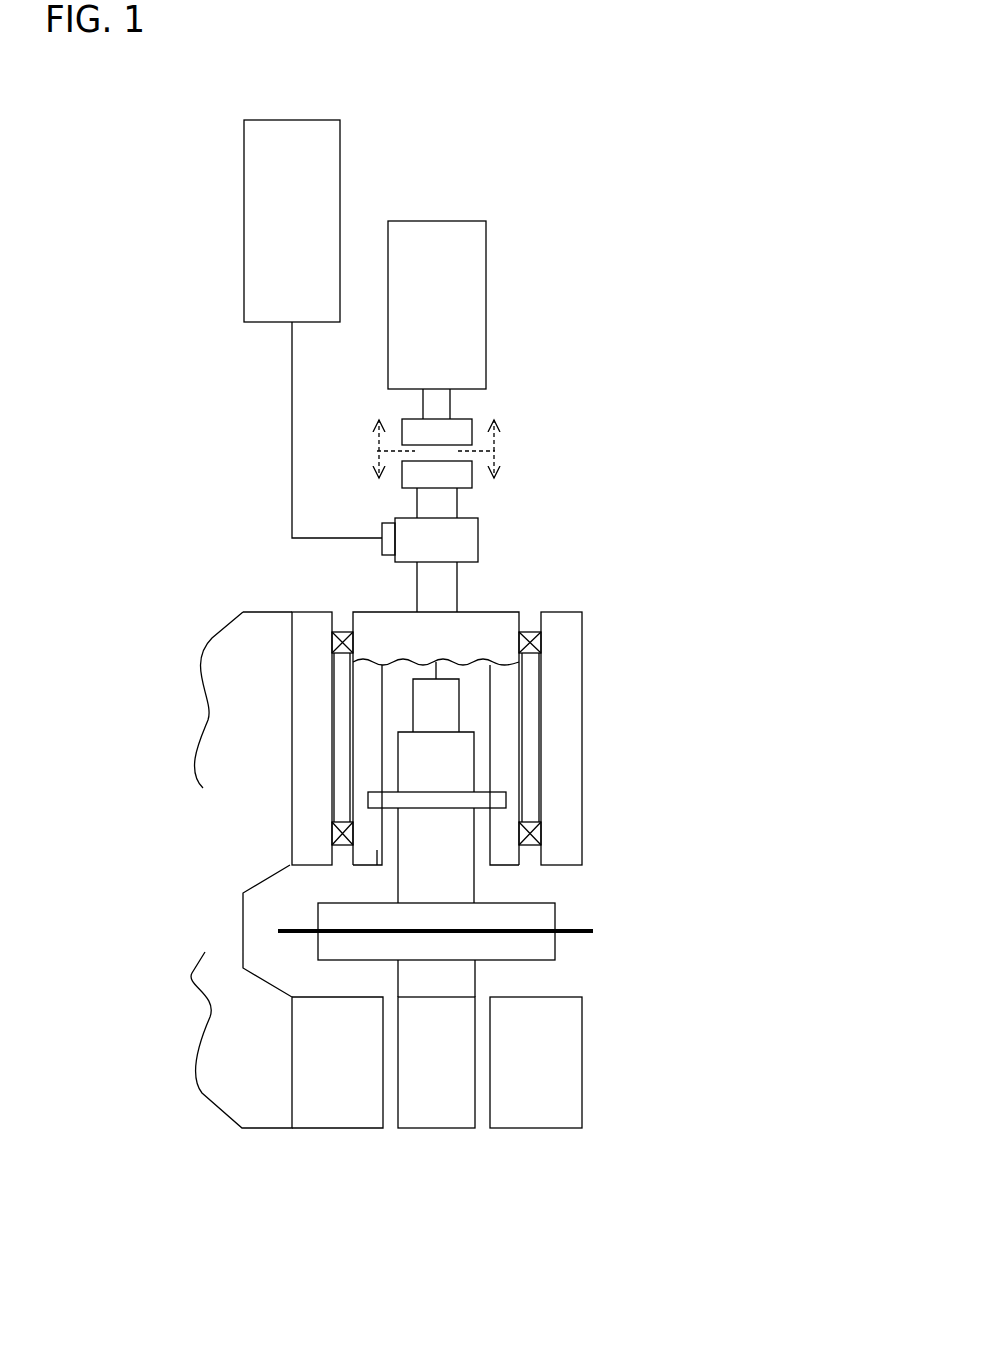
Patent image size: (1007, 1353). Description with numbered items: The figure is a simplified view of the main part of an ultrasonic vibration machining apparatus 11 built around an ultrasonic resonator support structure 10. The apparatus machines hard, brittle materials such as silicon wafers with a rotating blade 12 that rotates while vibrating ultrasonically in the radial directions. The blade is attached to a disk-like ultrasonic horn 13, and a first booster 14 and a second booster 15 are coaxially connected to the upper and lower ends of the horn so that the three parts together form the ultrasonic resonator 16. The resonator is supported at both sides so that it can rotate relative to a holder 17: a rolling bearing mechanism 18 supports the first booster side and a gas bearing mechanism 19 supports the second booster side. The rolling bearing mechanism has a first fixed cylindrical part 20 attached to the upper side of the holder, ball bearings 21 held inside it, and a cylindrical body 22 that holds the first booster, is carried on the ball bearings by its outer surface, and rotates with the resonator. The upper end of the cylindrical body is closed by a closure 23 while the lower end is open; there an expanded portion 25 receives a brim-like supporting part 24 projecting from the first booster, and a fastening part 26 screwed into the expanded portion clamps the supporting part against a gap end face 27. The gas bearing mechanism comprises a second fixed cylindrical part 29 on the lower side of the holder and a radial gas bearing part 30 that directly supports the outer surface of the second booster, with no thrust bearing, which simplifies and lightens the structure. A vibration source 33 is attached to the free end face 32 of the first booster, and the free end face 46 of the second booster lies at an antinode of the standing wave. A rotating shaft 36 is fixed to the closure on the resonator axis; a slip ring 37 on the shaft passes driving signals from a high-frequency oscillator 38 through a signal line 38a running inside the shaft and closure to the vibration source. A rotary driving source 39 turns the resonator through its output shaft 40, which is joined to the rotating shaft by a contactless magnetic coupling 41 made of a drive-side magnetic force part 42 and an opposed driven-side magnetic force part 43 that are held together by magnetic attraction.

The ultrasonic resonator support structure 10 is at (682, 642).
The ultrasonic vibration machining apparatus 11 is at (605, 103).
The rotating blade 12 is at (580, 927).
The ultrasonic horn 13 is at (567, 898).
The first booster 14 is at (395, 763).
The second booster 15 is at (420, 1097).
The ultrasonic resonator 16 is at (449, 1137).
The holder 17 is at (238, 1038).
The rolling bearing mechanism 18 is at (450, 710).
The gas bearing mechanism 19 is at (419, 1042).
The first fixed cylindrical part 20 is at (558, 715).
The ball bearings 21 is at (542, 642).
The cylindrical body 22 is at (505, 763).
The closure 23 is at (480, 612).
The supporting part 24 is at (380, 800).
The expanded portion 25 is at (497, 840).
The fastening part 26 is at (377, 850).
The gap end face 27 is at (507, 798).
The second fixed cylindrical part 29 is at (563, 1053).
The radial gas bearing part 30 is at (482, 1125).
The free end face 32 is at (412, 718).
The vibration source 33 is at (425, 697).
The rotating shaft 36 is at (428, 581).
The slip ring 37 is at (462, 530).
The high-frequency oscillator 38 is at (278, 215).
The signal line 38a is at (437, 670).
The rotary driving source 39 is at (455, 273).
The output shaft 40 is at (440, 405).
The contactless magnetic coupling 41 is at (535, 449).
The drive-side magnetic force part 42 is at (458, 423).
The driven-side magnetic force part 43 is at (460, 478).
The free end face 46 is at (415, 1130).